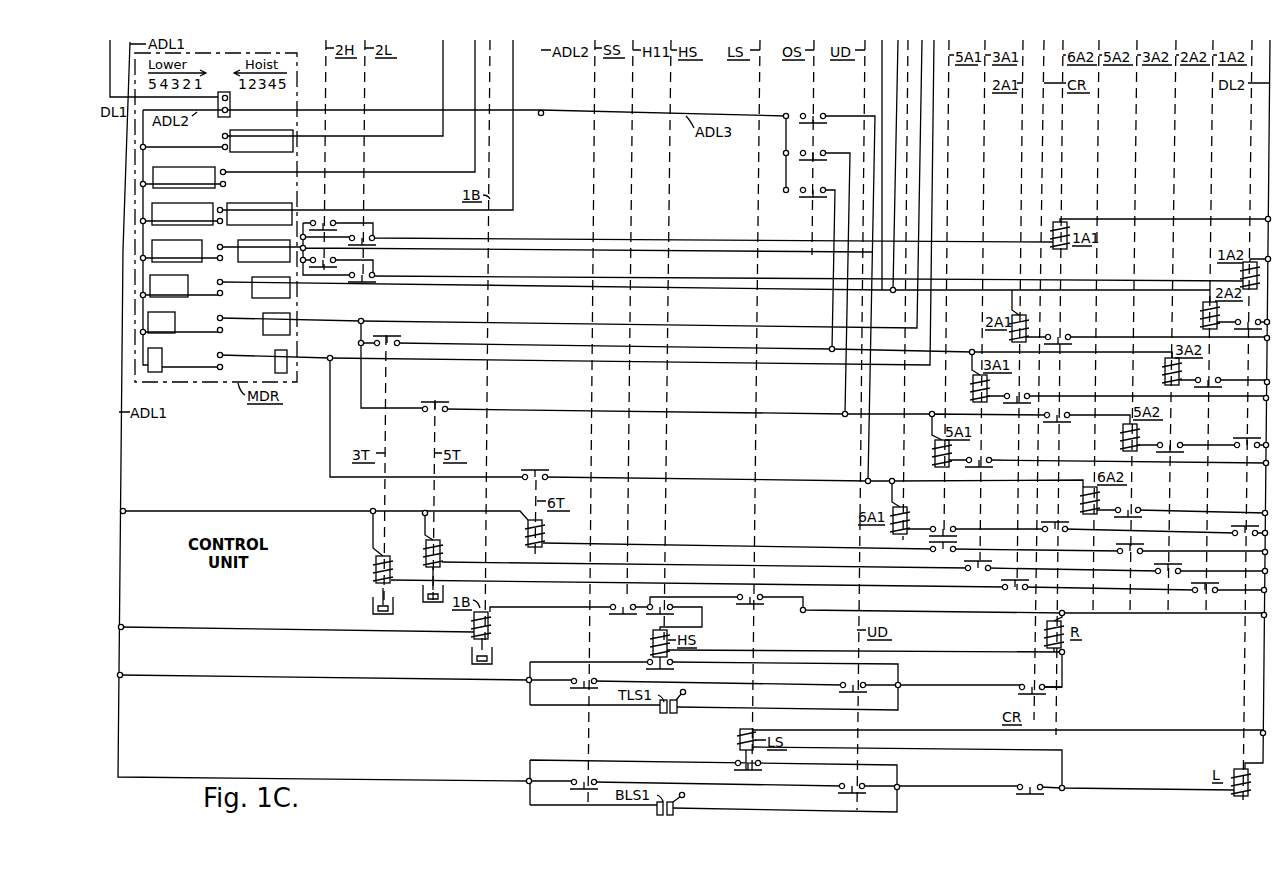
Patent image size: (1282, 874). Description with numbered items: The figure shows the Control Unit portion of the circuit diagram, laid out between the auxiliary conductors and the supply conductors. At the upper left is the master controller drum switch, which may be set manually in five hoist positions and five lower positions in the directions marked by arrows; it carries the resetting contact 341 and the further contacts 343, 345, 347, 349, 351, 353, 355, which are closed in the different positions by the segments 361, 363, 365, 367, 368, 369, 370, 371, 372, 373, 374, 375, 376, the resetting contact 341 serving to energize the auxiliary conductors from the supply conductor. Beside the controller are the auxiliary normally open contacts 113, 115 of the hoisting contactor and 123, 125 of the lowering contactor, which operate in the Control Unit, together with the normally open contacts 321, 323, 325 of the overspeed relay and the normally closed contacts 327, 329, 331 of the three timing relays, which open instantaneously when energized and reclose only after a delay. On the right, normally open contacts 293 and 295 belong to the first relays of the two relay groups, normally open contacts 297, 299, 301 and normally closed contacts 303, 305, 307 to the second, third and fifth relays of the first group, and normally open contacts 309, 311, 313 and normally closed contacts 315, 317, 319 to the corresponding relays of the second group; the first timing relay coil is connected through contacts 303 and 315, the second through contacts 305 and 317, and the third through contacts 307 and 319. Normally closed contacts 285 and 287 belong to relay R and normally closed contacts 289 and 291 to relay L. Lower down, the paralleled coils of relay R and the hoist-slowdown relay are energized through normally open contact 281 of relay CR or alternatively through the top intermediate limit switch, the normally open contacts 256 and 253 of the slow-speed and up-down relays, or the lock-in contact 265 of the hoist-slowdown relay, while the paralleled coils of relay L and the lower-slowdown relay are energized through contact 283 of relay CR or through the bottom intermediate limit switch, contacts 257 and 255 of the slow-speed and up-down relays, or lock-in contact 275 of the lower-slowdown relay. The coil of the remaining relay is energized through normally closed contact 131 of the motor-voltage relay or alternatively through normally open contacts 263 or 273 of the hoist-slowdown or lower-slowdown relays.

The auxiliary normally open contact 113 is at (333, 222).
The auxiliary normally open contact 115 is at (335, 264).
The auxiliary normally open contact 123 is at (375, 238).
The auxiliary normally open contact 125 is at (377, 278).
The normally closed contact 131 is at (614, 610).
The normally open contact 253 is at (840, 686).
The normally open contact 255 is at (839, 787).
The normally open contact 256 is at (573, 684).
The normally open contact 257 is at (571, 785).
The normally open contact 263 is at (653, 611).
The lock-in contact 265 is at (676, 666).
The normally open contact 273 is at (761, 602).
The lock-in contact 275 is at (737, 763).
The normally open contact 281 is at (1043, 688).
The normally open contact 283 is at (1017, 789).
The normally closed contact 285 is at (1064, 416).
The normally closed contact 287 is at (1062, 530).
The normally closed contact 289 is at (1228, 446).
The normally closed contact 291 is at (1235, 525).
The normally open contact 293 is at (1069, 336).
The normally open contact 295 is at (1234, 332).
The normally open contact 297 is at (1038, 395).
The normally open contact 299 is at (984, 460).
The normally open contact 301 is at (950, 512).
The normally closed contact 303 is at (1021, 590).
The normally closed contact 305 is at (971, 569).
The normally closed contact 307 is at (930, 550).
The normally open contact 309 is at (1219, 380).
The normally open contact 311 is at (1174, 446).
The normally open contact 313 is at (1126, 510).
The normally closed contact 315 is at (1208, 592).
The normally closed contact 317 is at (1161, 572).
The normally closed contact 319 is at (1120, 554).
The normally open contact 321 is at (824, 117).
The normally open contact 323 is at (824, 155).
The normally open contact 325 is at (803, 191).
The normally closed contact 327 is at (398, 341).
The normally closed contact 329 is at (425, 408).
The normally closed contact 331 is at (524, 476).
The resetting contact 341 is at (230, 98).
The controller contact 343 is at (222, 137).
The controller contact 345 is at (226, 183).
The controller contact 347 is at (187, 214).
The controller contact 349 is at (187, 251).
The controller contact 351 is at (186, 286).
The controller contact 353 is at (185, 322).
The controller contact 355 is at (202, 360).
The controller segment 361 is at (230, 112).
The controller segment 363 is at (262, 152).
The controller segment 365 is at (194, 166).
The controller segment 367 is at (254, 203).
The controller segment 368 is at (143, 221).
The controller segment 369 is at (253, 262).
The controller segment 370 is at (143, 258).
The controller segment 371 is at (256, 298).
The controller segment 372 is at (143, 295).
The controller segment 373 is at (265, 331).
The controller segment 374 is at (143, 332).
The controller segment 375 is at (275, 365).
The controller segment 376 is at (156, 348).